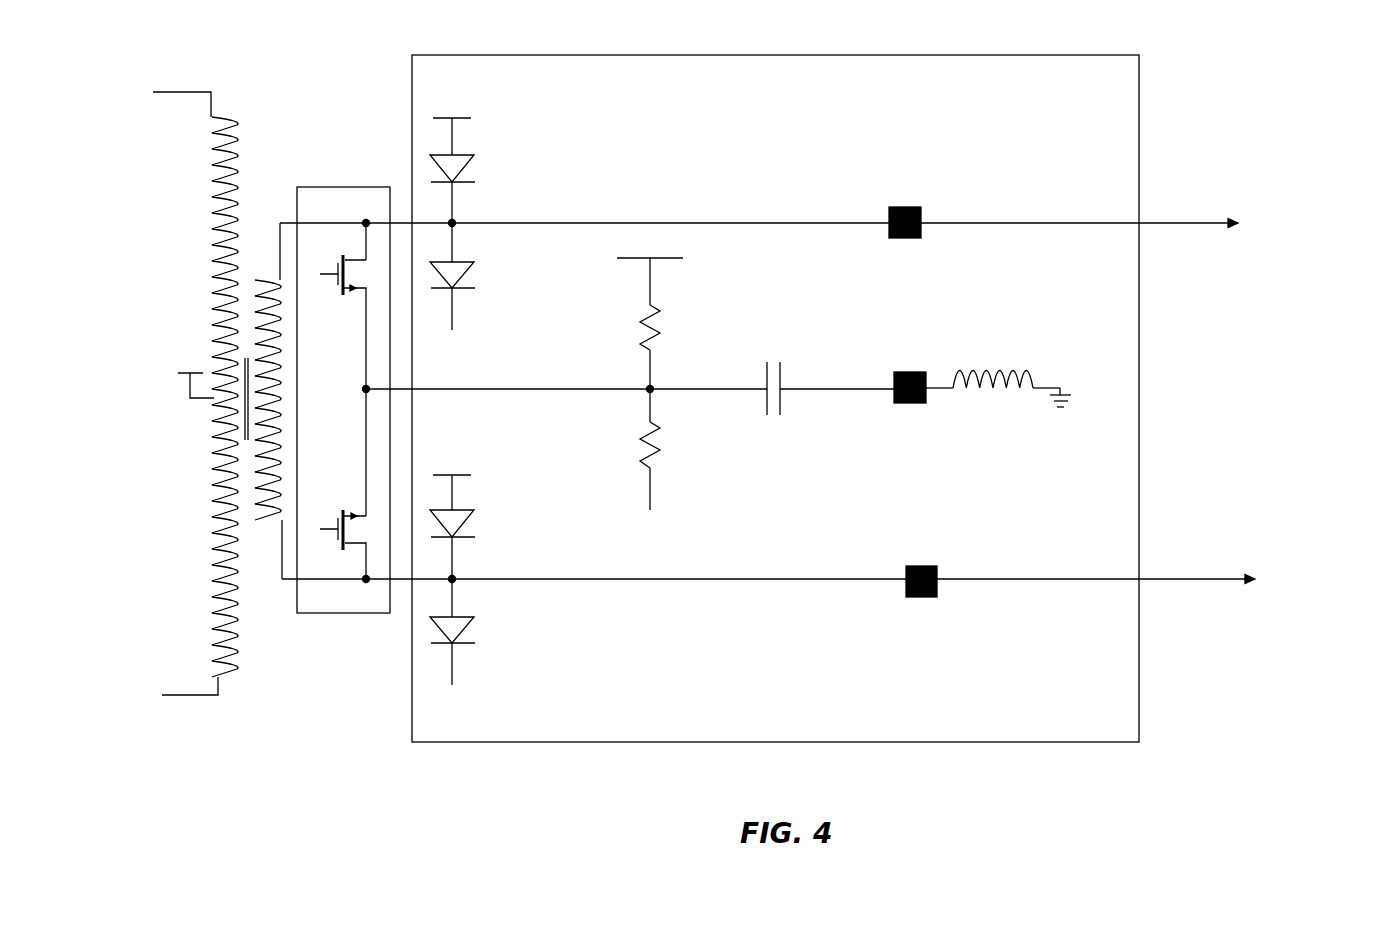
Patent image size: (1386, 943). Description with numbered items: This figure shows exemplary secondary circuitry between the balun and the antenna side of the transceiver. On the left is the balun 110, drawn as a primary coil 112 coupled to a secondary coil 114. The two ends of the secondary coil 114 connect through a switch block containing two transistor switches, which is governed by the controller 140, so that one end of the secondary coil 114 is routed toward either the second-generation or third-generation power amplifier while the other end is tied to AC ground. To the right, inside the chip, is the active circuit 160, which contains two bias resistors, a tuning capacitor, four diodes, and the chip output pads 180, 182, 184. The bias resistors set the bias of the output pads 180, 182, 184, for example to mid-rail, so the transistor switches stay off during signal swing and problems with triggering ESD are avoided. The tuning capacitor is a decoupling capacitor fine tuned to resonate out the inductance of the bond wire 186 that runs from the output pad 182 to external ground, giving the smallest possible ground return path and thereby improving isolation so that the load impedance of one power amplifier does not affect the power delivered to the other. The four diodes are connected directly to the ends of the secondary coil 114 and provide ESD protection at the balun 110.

The balun 110 is at (259, 393).
The primary coil 112 is at (202, 525).
The secondary coil 114 is at (283, 383).
The controller 140 is at (357, 613).
The active circuit 160 is at (828, 398).
The chip output pad 180 is at (905, 207).
The chip output pad 182 is at (910, 372).
The chip output pad 184 is at (922, 566).
The bond wire 186 is at (998, 357).